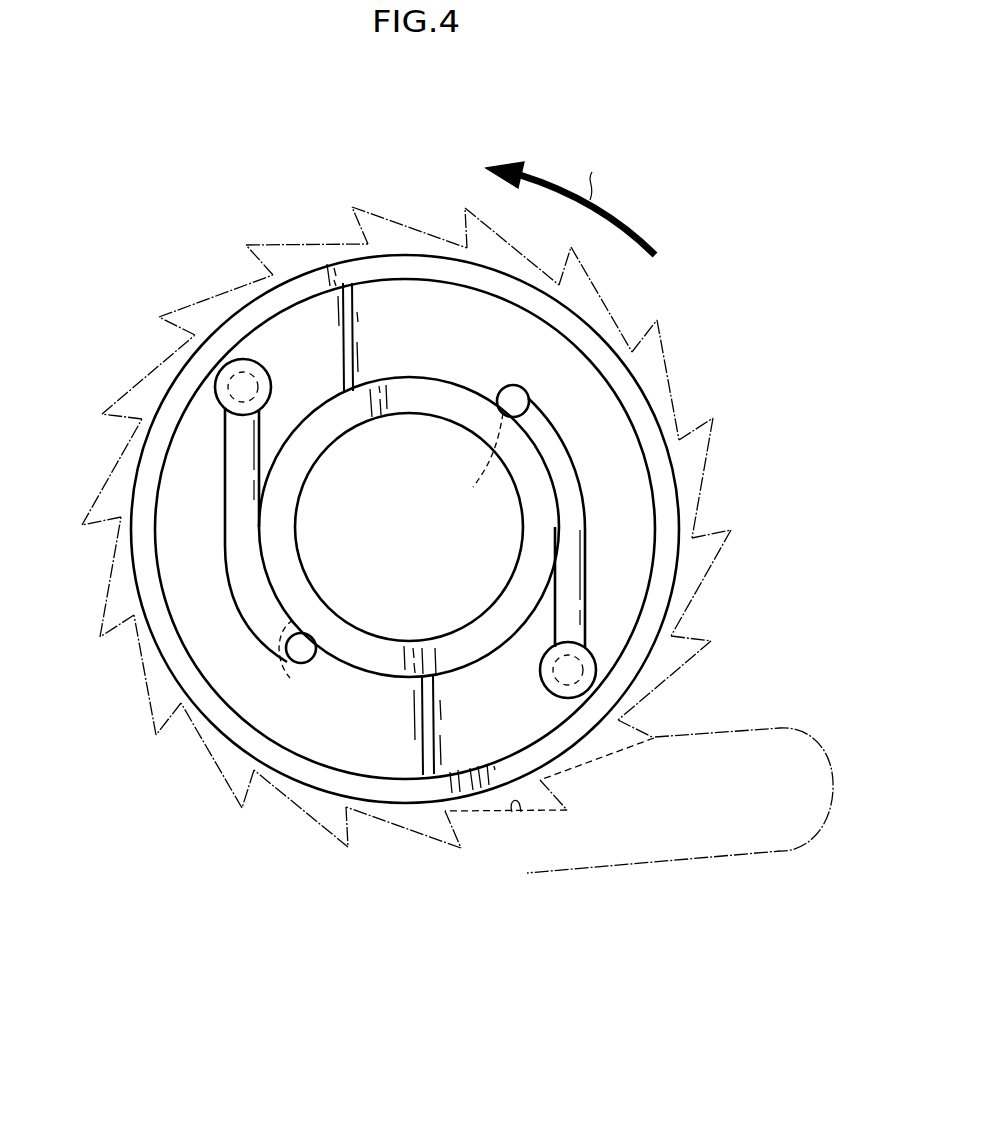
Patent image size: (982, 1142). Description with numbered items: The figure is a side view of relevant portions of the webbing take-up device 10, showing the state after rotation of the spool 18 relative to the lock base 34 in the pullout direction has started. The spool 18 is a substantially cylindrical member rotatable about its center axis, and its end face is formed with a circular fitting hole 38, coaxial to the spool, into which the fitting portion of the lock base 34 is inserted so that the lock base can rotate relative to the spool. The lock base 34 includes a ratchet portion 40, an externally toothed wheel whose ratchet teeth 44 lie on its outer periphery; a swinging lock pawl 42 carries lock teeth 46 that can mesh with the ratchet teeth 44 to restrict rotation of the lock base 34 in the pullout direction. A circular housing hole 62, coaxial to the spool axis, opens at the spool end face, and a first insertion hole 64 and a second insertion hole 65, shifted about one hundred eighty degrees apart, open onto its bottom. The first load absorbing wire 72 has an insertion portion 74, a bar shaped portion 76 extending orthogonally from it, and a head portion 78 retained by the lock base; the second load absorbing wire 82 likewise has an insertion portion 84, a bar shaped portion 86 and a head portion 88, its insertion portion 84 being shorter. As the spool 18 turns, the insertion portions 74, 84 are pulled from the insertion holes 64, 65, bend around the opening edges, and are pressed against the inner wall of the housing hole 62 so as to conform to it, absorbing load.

The webbing take-up device 10 is at (218, 205).
The spool 18 is at (587, 320).
The lock base 34 is at (406, 527).
The fitting hole 38 is at (416, 420).
The ratchet portion 40 is at (397, 818).
The lock pawl 42 is at (615, 866).
The ratchet teeth 44 is at (300, 820).
The lock teeth 46 is at (530, 812).
The housing hole 62 is at (400, 306).
The first insertion hole 64 is at (288, 675).
The second insertion hole 65 is at (514, 386).
The first load absorbing wire 72 is at (241, 620).
The insertion portion 74 is at (293, 620).
The bar shaped portion 76 is at (225, 432).
The head portion 78 is at (266, 375).
The second load absorbing wire 82 is at (590, 485).
The insertion portion 84 is at (481, 461).
The bar shaped portion 86 is at (578, 610).
The head portion 88 is at (545, 685).